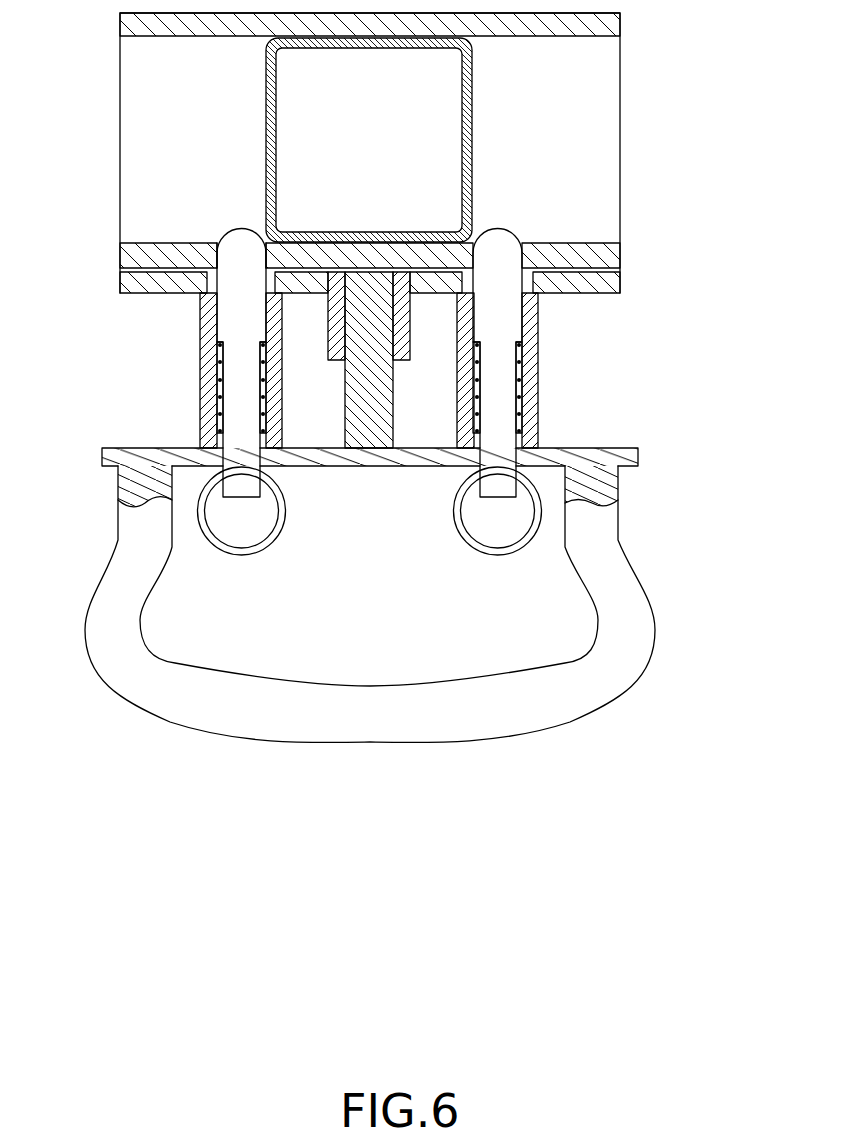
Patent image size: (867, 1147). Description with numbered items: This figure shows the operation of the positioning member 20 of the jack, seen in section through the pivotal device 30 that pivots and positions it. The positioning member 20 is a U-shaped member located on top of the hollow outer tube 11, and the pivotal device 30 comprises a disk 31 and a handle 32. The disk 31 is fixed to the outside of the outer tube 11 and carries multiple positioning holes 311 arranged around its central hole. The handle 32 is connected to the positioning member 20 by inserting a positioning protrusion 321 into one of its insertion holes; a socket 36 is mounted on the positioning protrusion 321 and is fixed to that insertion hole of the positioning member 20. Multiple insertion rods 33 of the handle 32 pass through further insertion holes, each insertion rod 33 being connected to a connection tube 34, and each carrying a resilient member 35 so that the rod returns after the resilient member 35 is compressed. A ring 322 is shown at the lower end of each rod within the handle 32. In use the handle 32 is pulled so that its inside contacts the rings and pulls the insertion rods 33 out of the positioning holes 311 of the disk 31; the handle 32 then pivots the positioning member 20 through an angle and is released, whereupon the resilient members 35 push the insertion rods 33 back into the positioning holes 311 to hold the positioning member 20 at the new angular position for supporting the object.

The outer tube 11 is at (470, 132).
The positioning member 20 is at (617, 283).
The pivotal device 30 is at (405, 465).
The disk 31 is at (615, 255).
The positioning holes 311 is at (215, 252).
The handle 32 is at (607, 525).
The positioning protrusion 321 is at (362, 410).
The annular ring 322 is at (465, 538).
The insertion rods 33 is at (503, 410).
The connection tube 34 is at (538, 330).
The resilient member 35 is at (522, 380).
The socket 36 is at (335, 322).